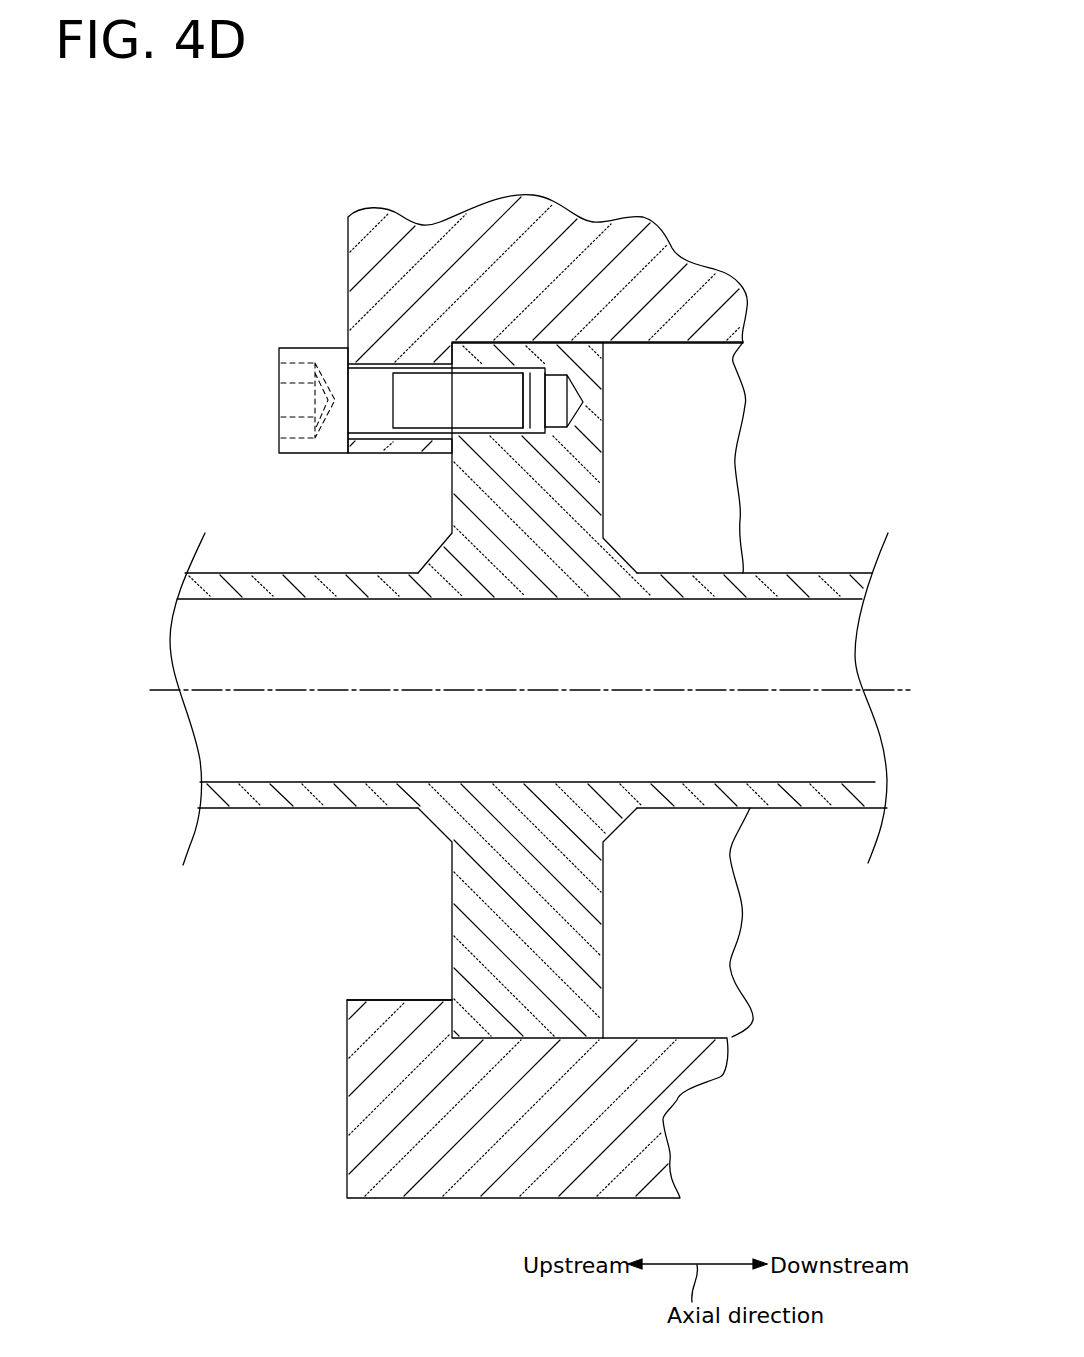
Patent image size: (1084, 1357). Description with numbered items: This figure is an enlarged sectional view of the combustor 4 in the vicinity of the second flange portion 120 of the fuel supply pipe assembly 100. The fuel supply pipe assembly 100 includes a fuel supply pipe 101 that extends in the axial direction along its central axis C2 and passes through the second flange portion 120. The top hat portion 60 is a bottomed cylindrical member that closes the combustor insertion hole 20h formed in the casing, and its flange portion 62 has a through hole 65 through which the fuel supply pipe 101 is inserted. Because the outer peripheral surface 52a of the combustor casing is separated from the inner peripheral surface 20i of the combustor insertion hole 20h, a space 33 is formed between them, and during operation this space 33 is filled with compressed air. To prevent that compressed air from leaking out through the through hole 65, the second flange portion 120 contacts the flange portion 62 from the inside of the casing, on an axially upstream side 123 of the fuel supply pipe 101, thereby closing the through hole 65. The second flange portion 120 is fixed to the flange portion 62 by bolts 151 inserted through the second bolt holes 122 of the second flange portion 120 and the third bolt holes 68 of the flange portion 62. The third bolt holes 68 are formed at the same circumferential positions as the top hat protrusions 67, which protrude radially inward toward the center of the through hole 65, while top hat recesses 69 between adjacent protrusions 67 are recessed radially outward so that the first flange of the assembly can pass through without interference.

The combustor 4 is at (428, 142).
The top hat portion 60 is at (622, 192).
The flange portion 62 is at (668, 267).
The bolt 151 is at (328, 358).
The top hat protrusion 67 is at (402, 447).
The third bolt hole 68 is at (415, 428).
The second bolt hole 122 is at (495, 428).
The combustor insertion hole 20h is at (548, 456).
The inner peripheral surface 20i is at (703, 344).
The space 33 is at (690, 437).
The second flange portion 120 is at (608, 502).
The fuel supply pipe assembly 100 is at (833, 482).
The fuel supply pipe 101 is at (798, 578).
The central axis C2 is at (895, 690).
The through hole 65 is at (400, 878).
The axially upstream side 123 is at (450, 946).
The top hat recess 69 is at (388, 1000).
The outer peripheral surface 52a is at (702, 1037).